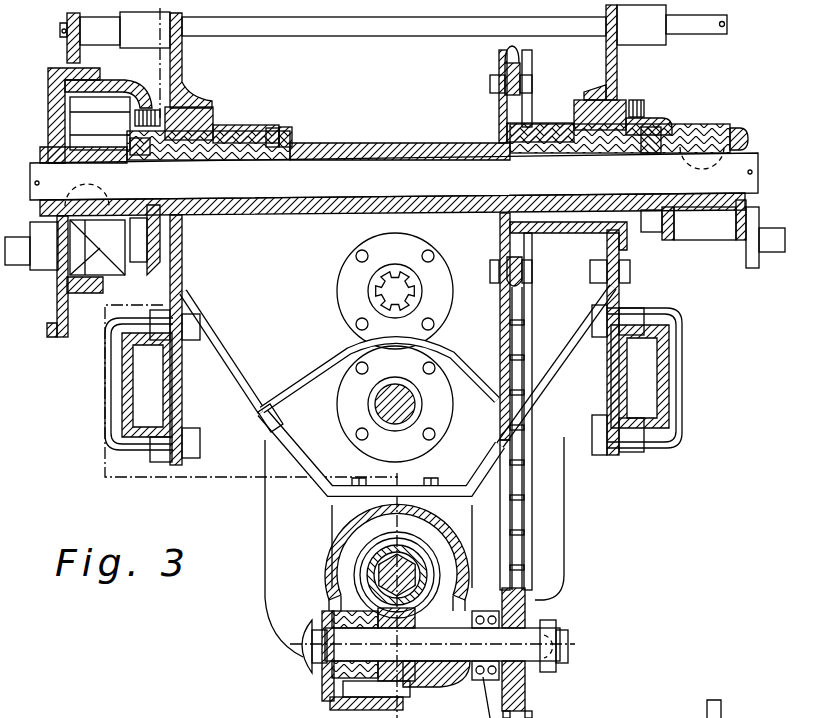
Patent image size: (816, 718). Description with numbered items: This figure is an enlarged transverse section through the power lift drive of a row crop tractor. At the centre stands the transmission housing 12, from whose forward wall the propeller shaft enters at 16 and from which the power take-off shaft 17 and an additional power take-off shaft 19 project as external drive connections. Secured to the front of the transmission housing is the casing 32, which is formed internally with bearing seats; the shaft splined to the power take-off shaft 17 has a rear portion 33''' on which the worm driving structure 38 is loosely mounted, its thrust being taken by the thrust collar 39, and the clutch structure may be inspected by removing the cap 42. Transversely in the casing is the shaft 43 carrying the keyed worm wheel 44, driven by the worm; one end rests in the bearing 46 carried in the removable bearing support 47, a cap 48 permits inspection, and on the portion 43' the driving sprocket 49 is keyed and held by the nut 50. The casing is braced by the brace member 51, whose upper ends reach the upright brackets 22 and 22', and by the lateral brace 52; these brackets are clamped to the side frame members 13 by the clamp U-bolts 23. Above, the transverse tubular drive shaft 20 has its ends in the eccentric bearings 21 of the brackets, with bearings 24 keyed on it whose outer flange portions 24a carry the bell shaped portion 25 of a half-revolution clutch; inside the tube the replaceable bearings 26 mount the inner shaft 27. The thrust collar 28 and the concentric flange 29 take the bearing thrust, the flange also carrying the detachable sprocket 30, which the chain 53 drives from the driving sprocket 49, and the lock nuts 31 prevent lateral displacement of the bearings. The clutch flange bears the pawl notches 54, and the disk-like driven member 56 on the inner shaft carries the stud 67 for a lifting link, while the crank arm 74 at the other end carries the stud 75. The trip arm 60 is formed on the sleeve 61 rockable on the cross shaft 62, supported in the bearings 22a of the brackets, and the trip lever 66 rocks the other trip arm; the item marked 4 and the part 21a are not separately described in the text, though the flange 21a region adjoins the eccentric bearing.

The arm 4 is at (163, 22).
The transmission housing 12 is at (564, 440).
The side frame members 13 is at (395, 381).
The crank arm 74 is at (712, 137).
The propeller shaft entry 16 is at (379, 403).
The power take-off shaft 17 is at (372, 550).
The additional power take-off shaft 19 is at (395, 291).
The transverse tubular drive shaft 20 is at (354, 147).
The eccentric bearings 21 is at (262, 128).
The hub flange 21a is at (217, 112).
The upright upper right hand bracket 22 is at (200, 60).
The upright upper left hand bracket 22' is at (590, 52).
The bearings 22a is at (121, 47).
The clamp U-bolts 23 is at (117, 412).
The bearings 24 is at (268, 127).
The outer flange portions 24a is at (154, 108).
The bell shaped portion 25 is at (141, 263).
The replaceable bearings 26 is at (198, 163).
The inner shaft 27 is at (394, 179).
The thrust collar 28 is at (293, 131).
The concentric flange 29 is at (499, 103).
The detachable sprocket 30 is at (505, 68).
The lock nuts 31 is at (132, 143).
The casing 32 is at (352, 523).
The rear portion of shaft 33''' is at (354, 575).
The worm driving structure 38 is at (432, 555).
The thrust collar 39 is at (435, 570).
The cap 42 is at (605, 710).
The shaft 43 is at (432, 645).
The portion of shaft 43' is at (574, 645).
The worm wheel 44 is at (407, 697).
The bearing 46 is at (317, 672).
The removable bearing support 47 is at (328, 693).
The cap 48 is at (304, 630).
The driving sprocket 49 is at (545, 603).
The nut 50 is at (560, 661).
The brace member 51 is at (298, 440).
The lateral brace 52 is at (351, 355).
The chain 53 is at (545, 518).
The pawl sets or notches 54 is at (68, 268).
The right hand member 56 is at (75, 335).
The trip arm 60 is at (68, 48).
The sleeve 61 is at (90, 31).
The cross shaft 62 is at (454, 28).
The trip lever 66 is at (721, 708).
The stud 67 is at (25, 237).
The stud 75 is at (771, 228).